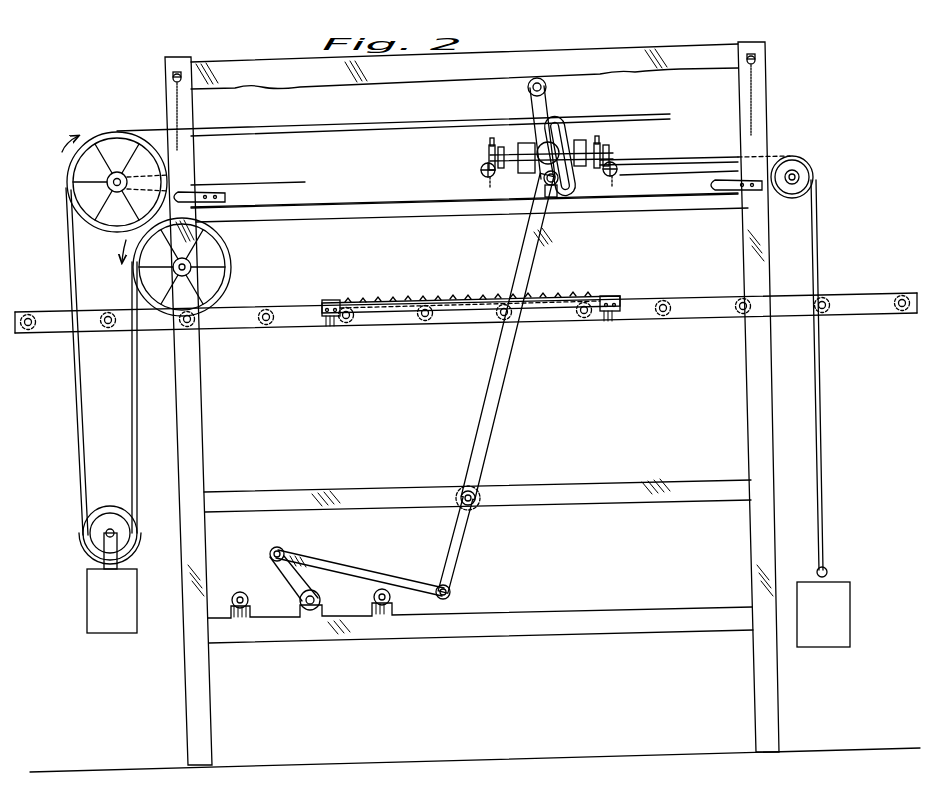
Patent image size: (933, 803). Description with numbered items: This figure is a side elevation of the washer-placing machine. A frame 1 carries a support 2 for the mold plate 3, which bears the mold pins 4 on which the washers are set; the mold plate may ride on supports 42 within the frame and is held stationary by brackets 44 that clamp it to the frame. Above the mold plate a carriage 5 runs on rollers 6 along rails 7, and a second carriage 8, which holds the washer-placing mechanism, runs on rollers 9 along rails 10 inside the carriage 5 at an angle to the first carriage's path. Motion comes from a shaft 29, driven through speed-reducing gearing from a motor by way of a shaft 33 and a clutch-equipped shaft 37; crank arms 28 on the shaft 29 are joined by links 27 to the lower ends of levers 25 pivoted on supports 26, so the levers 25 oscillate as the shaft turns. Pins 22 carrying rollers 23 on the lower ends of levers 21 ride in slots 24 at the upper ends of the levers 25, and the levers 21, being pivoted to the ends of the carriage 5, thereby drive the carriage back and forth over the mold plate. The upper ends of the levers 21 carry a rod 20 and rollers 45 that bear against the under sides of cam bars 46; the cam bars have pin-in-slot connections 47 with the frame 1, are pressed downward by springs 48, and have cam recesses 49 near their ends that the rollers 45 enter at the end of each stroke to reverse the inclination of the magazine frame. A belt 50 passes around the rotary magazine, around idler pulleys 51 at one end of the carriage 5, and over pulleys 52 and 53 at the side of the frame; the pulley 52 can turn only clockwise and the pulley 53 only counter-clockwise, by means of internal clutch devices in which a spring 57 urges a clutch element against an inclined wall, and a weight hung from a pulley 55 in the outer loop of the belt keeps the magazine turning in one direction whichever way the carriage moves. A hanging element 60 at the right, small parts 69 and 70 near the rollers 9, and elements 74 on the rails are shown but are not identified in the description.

The frame 1 is at (205, 457).
The support 2 is at (700, 300).
The mold plate 3 is at (395, 314).
The mold pins 4 is at (380, 300).
The carriage 5 is at (585, 146).
The rollers 6 is at (481, 171).
The rails 7 is at (305, 190).
The carriage 8 is at (524, 150).
The rollers 9 is at (500, 154).
The rails 10 is at (490, 186).
The rod 20 is at (547, 88).
The levers 21 is at (553, 125).
The pins 22 is at (556, 184).
The rollers 23 is at (552, 198).
The slots 24 is at (572, 128).
The levers 25 is at (512, 381).
The supports 26 is at (466, 490).
The links 27 is at (395, 582).
The crank arms 28 is at (300, 575).
The shaft 29 is at (310, 610).
The shaft 33 is at (244, 594).
The shaft 37 is at (391, 598).
The supports 42 is at (588, 316).
The brackets 44 is at (335, 301).
The rollers 45 is at (538, 84).
The cam bars 46 is at (618, 66).
The pin-in-slot connections 47 is at (173, 78).
The springs 48 is at (174, 103).
The cam recesses 49 is at (250, 88).
The belt 50 is at (400, 127).
The idler pulleys 51 is at (528, 118).
The pulley 52 is at (70, 185).
The pulley 53 is at (230, 270).
The pulley 55 is at (100, 540).
The spring 57 is at (100, 610).
The counterweight 60 is at (835, 606).
The pin 69 is at (492, 152).
The pin 70 is at (490, 158).
The bracket 74 is at (228, 191).